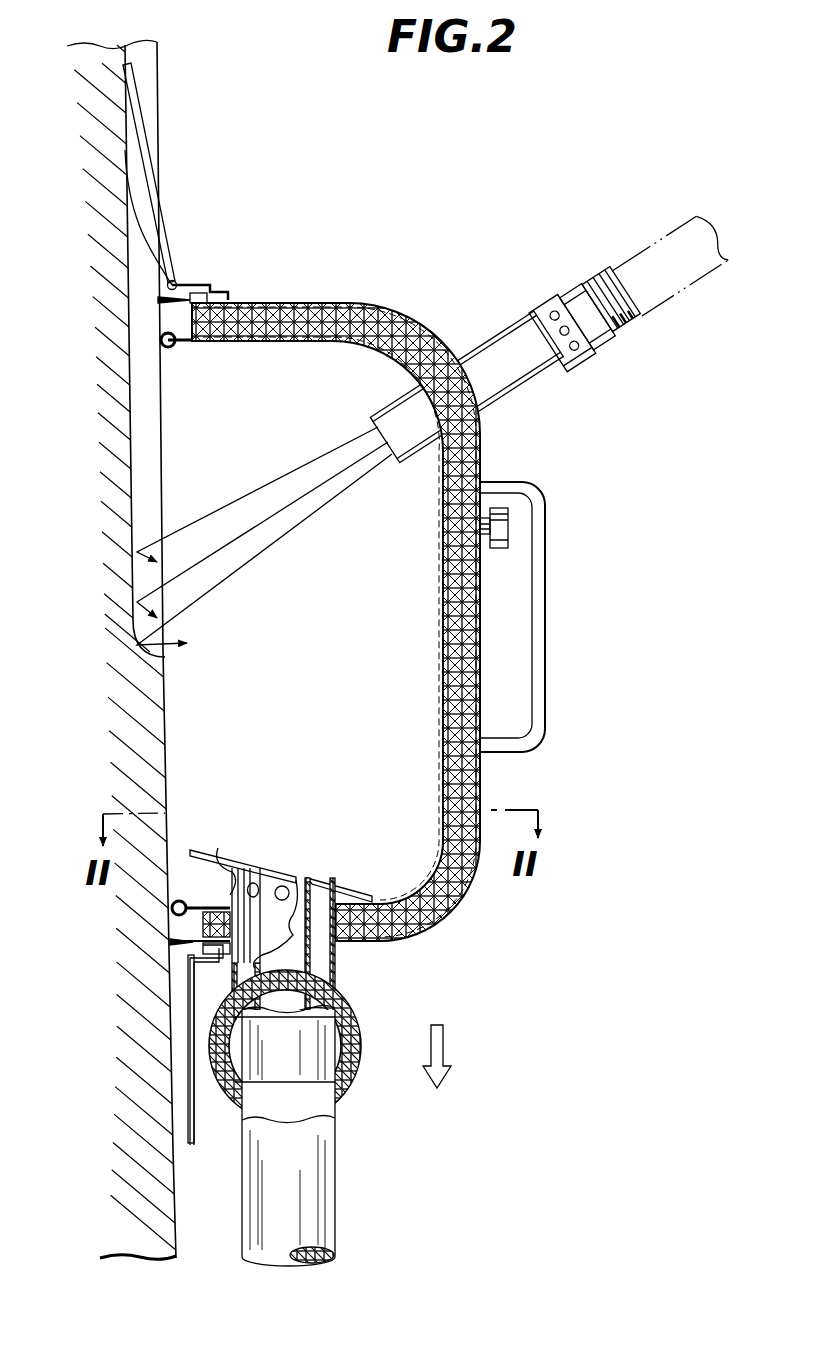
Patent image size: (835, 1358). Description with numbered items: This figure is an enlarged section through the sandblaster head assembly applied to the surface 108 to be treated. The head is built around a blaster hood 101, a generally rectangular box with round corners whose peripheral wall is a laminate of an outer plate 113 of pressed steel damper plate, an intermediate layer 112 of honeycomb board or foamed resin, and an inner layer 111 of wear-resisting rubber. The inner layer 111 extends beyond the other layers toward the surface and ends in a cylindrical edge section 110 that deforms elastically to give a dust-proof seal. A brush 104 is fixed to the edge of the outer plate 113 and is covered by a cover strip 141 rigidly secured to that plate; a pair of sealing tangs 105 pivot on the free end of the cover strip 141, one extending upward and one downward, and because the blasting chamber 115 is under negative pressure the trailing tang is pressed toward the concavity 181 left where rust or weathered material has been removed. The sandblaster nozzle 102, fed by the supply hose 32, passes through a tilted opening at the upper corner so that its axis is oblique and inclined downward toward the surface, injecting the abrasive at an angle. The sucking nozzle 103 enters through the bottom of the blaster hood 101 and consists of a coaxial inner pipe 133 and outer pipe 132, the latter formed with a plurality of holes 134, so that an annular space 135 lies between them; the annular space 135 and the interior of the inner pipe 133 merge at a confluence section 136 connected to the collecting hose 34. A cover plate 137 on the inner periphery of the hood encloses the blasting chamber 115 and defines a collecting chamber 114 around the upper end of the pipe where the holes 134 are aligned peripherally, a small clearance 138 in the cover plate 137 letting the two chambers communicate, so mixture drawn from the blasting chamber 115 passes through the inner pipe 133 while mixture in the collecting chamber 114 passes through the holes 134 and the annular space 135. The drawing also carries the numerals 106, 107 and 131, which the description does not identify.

The supply hose 32 is at (660, 232).
The collecting hose 34 is at (330, 1210).
The blaster hood 101 is at (440, 328).
The sandblaster nozzle 102 is at (507, 316).
The sucking nozzle 103 is at (370, 1030).
The brush 104 is at (163, 290).
The sealing tang 105 is at (142, 102).
The holder bracket 106 is at (538, 565).
The screw 107 is at (499, 522).
The surface to be treated 108 is at (178, 1176).
The cylindrical edge section 110 is at (176, 345).
The inner layer 111 is at (400, 345).
The intermediate layer 112 is at (372, 332).
The outer plate 113 is at (300, 302).
The collecting chamber 114 is at (188, 880).
The blasting chamber 115 is at (320, 607).
The inner tube 131 is at (310, 995).
The outer pipe 132 is at (342, 952).
The inner pipe 133 is at (283, 885).
The holes 134 is at (253, 882).
The annular space 135 is at (320, 908).
The confluence section 136 is at (318, 1055).
The cover plate 137 is at (310, 870).
The small clearance 138 is at (180, 855).
The cover strip 141 is at (197, 290).
The concavity 181 is at (118, 508).